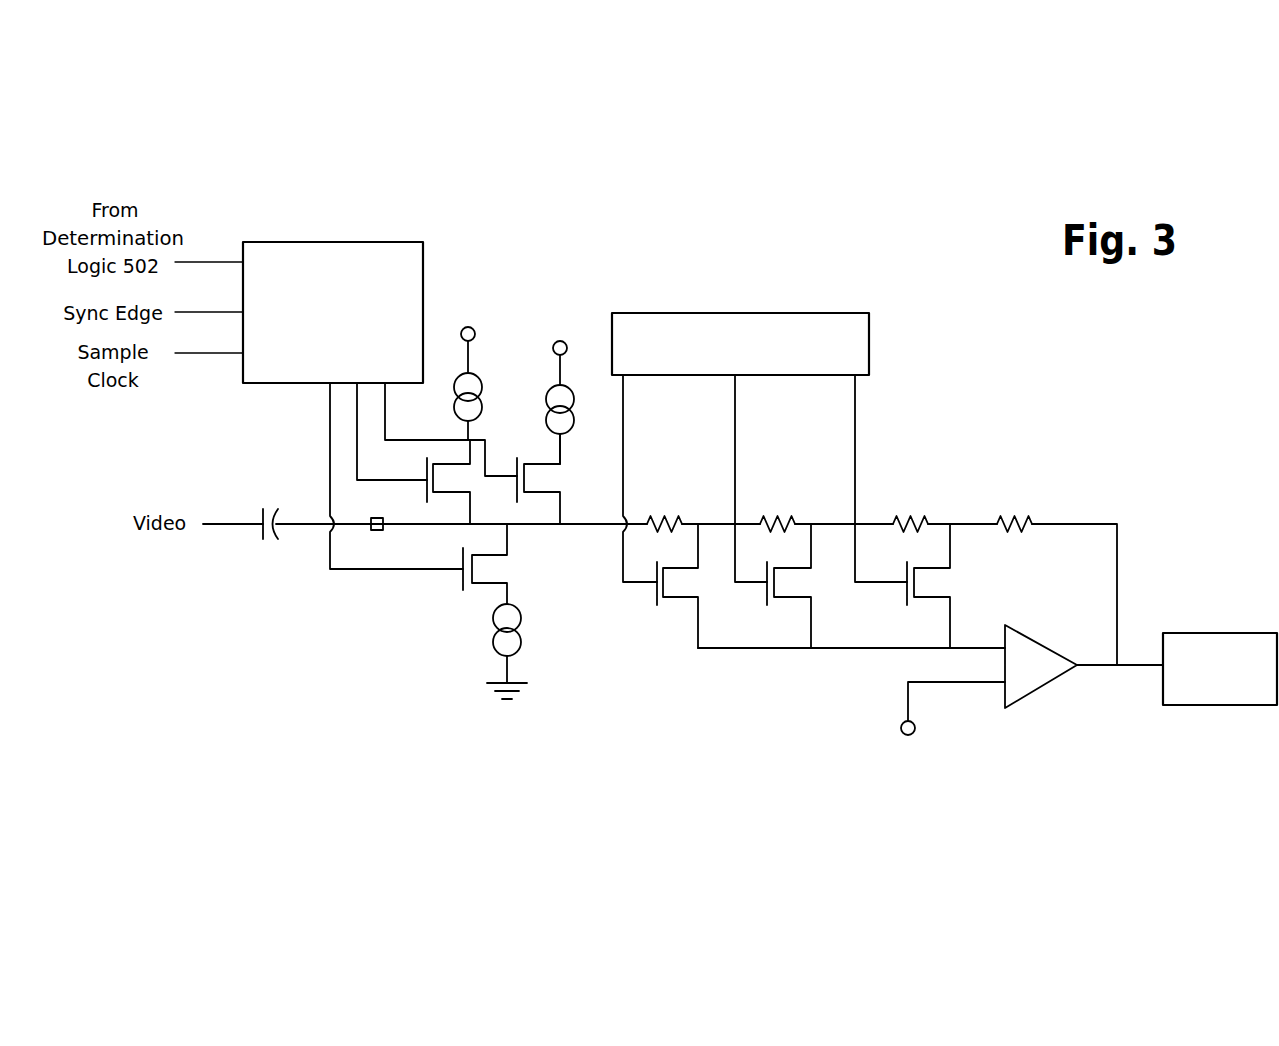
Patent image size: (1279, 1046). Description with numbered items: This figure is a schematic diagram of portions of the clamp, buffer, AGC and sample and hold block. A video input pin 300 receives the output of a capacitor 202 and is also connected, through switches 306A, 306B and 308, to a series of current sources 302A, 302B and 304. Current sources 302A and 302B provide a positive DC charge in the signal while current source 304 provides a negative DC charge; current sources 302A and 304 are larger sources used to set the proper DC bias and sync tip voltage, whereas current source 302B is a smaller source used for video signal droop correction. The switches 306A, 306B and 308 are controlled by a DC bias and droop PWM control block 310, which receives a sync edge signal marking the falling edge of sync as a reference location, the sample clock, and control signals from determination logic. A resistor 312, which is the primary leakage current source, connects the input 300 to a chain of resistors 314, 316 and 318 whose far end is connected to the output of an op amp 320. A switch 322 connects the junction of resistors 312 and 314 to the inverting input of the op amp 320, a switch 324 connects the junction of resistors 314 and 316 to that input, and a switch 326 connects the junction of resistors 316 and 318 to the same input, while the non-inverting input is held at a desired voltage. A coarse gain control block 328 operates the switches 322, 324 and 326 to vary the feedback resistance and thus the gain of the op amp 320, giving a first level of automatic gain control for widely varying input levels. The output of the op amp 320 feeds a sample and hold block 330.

The capacitor 202 is at (262, 534).
The video input pin 300 is at (377, 531).
The current source 302A is at (481, 378).
The current source 302B is at (546, 388).
The current source 304 is at (492, 617).
The switch 306A is at (427, 497).
The switch 306B is at (548, 468).
The switch 308 is at (461, 580).
The DC bias and droop PWM control block 310 is at (423, 287).
The resistor 312 is at (660, 515).
The resistor 314 is at (777, 515).
The resistor 316 is at (907, 515).
The resistor 318 is at (1012, 517).
The op amp 320 is at (1040, 690).
The switch 322 is at (650, 588).
The switch 324 is at (763, 588).
The switch 326 is at (903, 590).
The coarse gain control block 328 is at (768, 313).
The sample and hold block 330 is at (1225, 707).